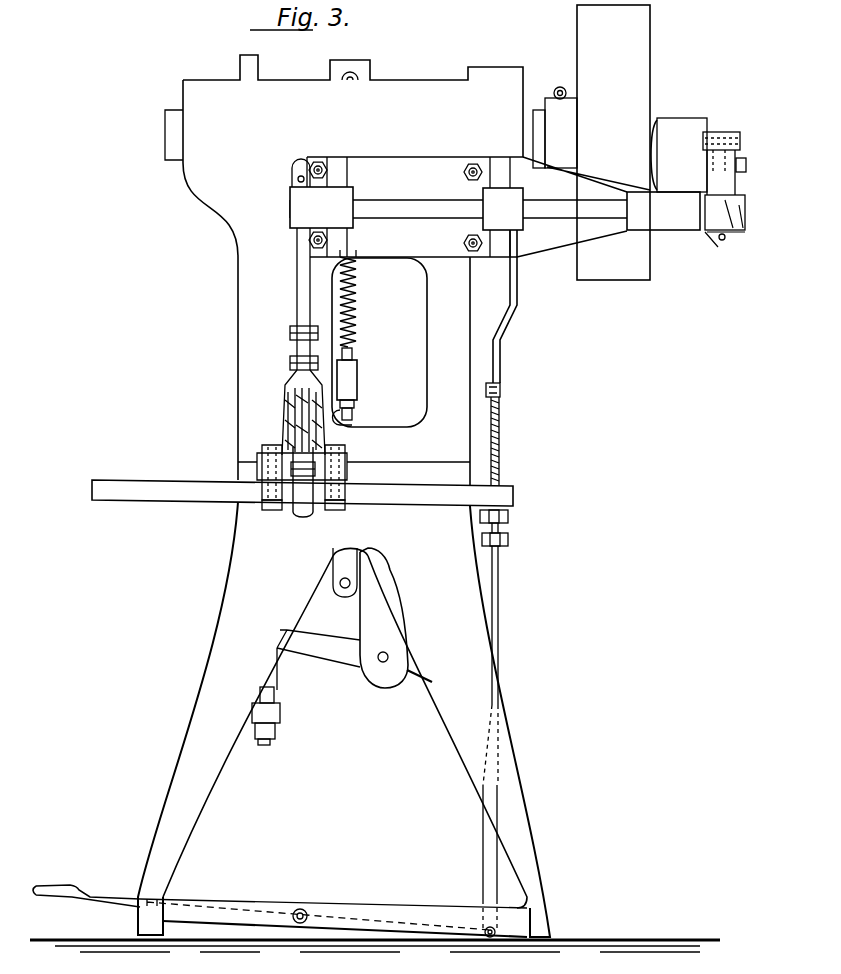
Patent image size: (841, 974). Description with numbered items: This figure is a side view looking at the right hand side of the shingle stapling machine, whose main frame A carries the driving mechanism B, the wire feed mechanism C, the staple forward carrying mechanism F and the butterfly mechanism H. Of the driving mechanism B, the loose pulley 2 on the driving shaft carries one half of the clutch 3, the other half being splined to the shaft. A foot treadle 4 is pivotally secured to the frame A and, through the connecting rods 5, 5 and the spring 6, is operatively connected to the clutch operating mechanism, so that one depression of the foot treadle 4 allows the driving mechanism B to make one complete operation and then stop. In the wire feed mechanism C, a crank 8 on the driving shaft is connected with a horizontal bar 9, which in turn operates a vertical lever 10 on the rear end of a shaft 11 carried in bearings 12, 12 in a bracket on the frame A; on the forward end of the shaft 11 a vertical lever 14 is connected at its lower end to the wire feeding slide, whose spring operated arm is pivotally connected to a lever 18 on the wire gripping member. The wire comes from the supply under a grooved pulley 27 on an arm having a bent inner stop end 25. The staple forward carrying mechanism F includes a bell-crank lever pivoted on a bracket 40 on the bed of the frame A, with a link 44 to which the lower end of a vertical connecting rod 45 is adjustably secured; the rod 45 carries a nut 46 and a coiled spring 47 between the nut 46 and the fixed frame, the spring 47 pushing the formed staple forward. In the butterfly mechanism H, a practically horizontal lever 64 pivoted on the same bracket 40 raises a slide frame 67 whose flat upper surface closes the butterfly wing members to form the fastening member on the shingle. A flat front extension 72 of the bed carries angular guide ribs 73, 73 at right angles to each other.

The frame A is at (344, 267).
The driving mechanism B is at (613, 142).
The wire feed mechanism C is at (299, 266).
The staple forward carrying mechanism F is at (356, 342).
The butterfly mechanism H is at (309, 648).
The loose pulley 2 is at (651, 48).
The clutch 3 is at (527, 112).
The foot treadle 4 is at (85, 894).
The connecting rods 5 is at (500, 373).
The spring 6 is at (500, 457).
The crank 8 is at (692, 172).
The horizontal bar 9 is at (733, 134).
The vertical lever 10 is at (727, 232).
The shaft 11 is at (410, 207).
The bearings 12 is at (495, 208).
The vertical lever 14 is at (298, 311).
The lever 18 is at (710, 229).
The bent inner stop end 25 is at (296, 516).
The grooved pulley 27 is at (317, 470).
The bracket 40 is at (384, 618).
The link 44 is at (338, 572).
The vertical connecting rod 45 is at (356, 421).
The nut 46 is at (358, 369).
The coiled spring 47 is at (357, 299).
The horizontal lever 64 is at (346, 656).
The slide frame 67 is at (276, 692).
The flat front extension 72 is at (181, 502).
The angular guide ribs 73 is at (168, 472).